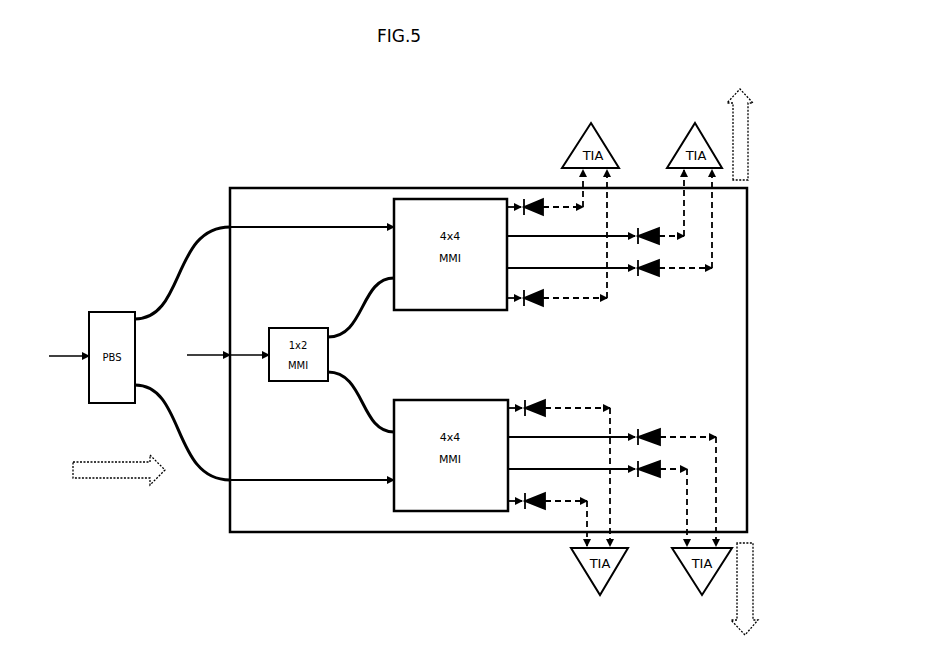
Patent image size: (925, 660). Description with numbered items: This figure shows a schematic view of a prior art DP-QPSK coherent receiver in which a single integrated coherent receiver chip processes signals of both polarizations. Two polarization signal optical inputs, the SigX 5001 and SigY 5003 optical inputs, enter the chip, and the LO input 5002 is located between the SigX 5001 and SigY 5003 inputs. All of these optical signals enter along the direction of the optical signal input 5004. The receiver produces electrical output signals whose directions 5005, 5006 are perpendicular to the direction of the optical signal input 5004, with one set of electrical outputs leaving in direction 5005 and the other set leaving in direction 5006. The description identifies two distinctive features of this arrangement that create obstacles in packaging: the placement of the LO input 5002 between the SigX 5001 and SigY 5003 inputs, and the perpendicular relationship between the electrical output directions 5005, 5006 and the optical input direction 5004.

The SigX optical input 5001 is at (225, 228).
The LO input 5002 is at (207, 343).
The SigY optical input 5003 is at (205, 483).
The direction of the optical signal input 5004 is at (110, 481).
The direction of the electrical output signals 5005 is at (730, 128).
The direction of the electrical output signals 5006 is at (735, 590).